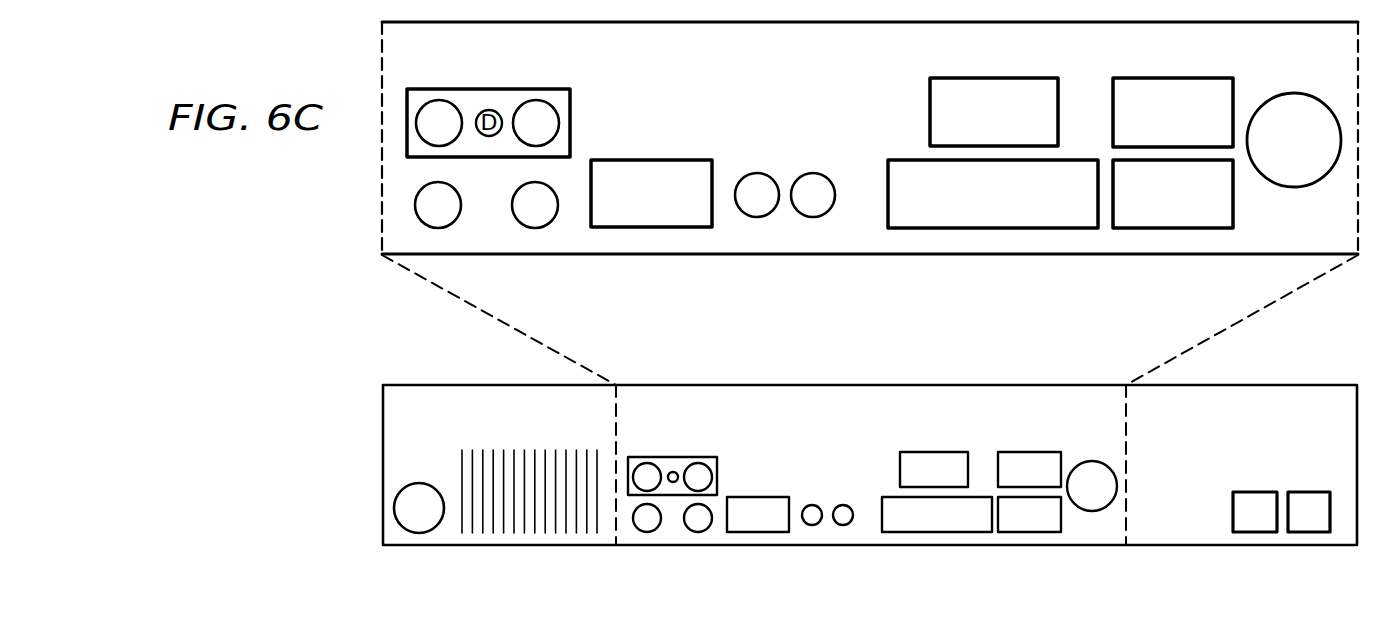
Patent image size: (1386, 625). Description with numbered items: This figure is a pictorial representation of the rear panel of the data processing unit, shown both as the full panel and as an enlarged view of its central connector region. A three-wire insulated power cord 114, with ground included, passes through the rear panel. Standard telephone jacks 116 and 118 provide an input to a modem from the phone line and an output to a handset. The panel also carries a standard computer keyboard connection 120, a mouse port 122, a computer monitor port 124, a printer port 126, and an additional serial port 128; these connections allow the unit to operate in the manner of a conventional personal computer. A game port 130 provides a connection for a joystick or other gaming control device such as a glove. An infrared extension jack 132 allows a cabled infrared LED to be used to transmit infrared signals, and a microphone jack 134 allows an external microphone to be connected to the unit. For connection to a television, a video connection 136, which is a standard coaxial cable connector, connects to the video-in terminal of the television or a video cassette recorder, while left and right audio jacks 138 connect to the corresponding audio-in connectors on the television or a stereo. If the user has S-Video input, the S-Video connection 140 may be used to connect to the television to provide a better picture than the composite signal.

The power cord 114 is at (422, 483).
The telephone jack 116 is at (1253, 492).
The telephone jack 118 is at (1310, 492).
The computer keyboard connection 120 is at (1296, 93).
The mouse port 122 is at (1173, 78).
The computer monitor port 124 is at (993, 78).
The printer port 126 is at (900, 160).
The serial port 128 is at (1233, 210).
The game port 130 is at (651, 159).
The infrared extension jack 132 is at (757, 172).
The microphone jack 134 is at (813, 172).
The video connection 136 is at (536, 99).
The left and right audio jacks 138 is at (440, 99).
The S-Video connection 140 is at (517, 222).